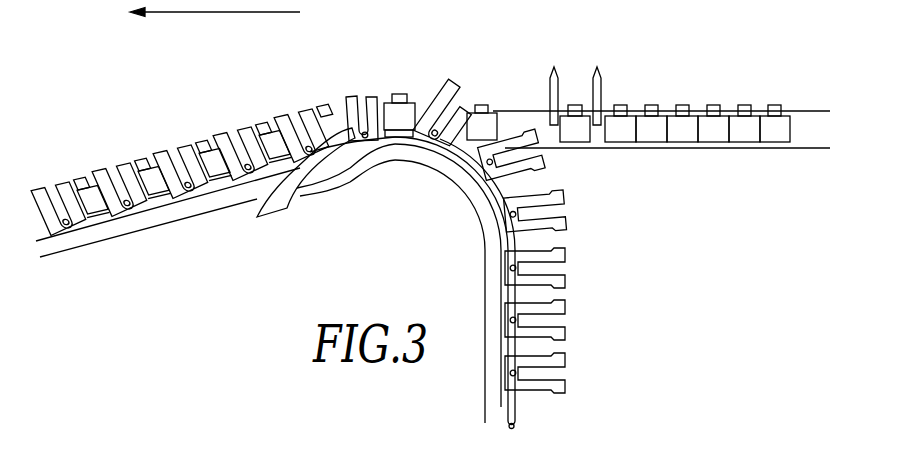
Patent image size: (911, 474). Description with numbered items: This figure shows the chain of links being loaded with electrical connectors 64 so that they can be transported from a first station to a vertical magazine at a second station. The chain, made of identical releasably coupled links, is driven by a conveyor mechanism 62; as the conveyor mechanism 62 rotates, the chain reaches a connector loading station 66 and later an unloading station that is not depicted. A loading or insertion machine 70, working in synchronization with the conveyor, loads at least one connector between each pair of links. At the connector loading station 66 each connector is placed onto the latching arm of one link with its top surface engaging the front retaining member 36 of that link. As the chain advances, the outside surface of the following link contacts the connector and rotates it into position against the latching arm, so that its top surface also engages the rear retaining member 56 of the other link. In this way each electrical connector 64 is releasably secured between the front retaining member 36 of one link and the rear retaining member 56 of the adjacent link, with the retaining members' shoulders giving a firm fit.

The front retaining member 36 is at (458, 88).
The rear retaining member 56 is at (377, 95).
The conveyor mechanism 62 is at (75, 243).
The electrical connectors 64 is at (152, 178).
The connector loading station 66 is at (560, 163).
The loading or insertion machine 70 is at (795, 133).